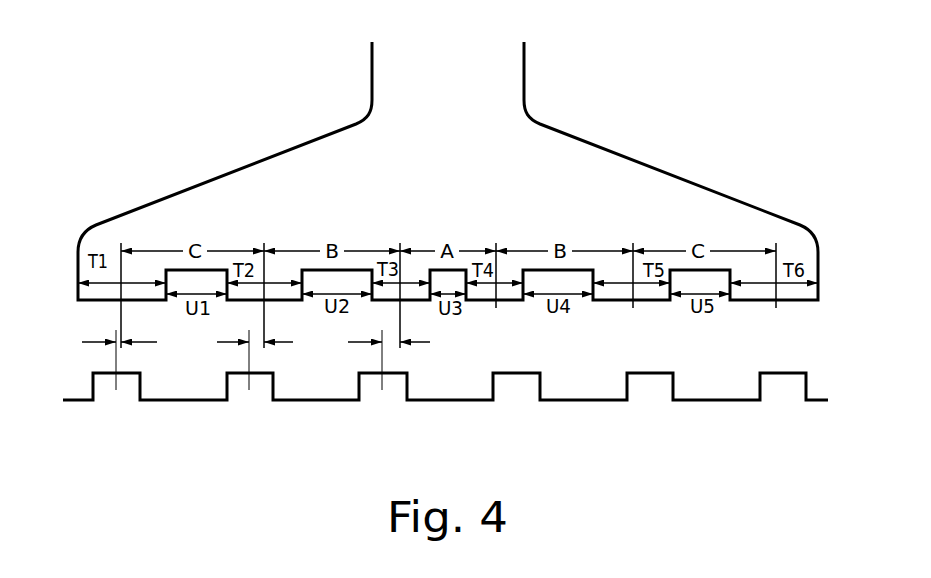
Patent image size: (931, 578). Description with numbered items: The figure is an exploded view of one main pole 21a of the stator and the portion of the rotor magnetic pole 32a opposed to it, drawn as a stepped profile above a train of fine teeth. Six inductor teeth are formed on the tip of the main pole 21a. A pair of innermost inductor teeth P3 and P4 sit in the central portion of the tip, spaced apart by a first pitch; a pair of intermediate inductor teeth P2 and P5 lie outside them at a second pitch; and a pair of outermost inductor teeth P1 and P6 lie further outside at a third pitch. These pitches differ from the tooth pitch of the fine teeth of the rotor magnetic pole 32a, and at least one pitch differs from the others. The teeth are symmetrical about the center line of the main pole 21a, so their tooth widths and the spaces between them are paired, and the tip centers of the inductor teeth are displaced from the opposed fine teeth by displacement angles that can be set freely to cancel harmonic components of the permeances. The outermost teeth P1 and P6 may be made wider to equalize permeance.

The main pole 21a is at (497, 92).
The rotor magnetic pole 32a is at (467, 431).
The outermost inductor tooth P1 is at (102, 292).
The intermediate inductor tooth P2 is at (280, 292).
The innermost inductor tooth P3 is at (391, 292).
The innermost inductor tooth P4 is at (510, 292).
The intermediate inductor tooth P5 is at (645, 292).
The outermost inductor tooth P6 is at (771, 292).